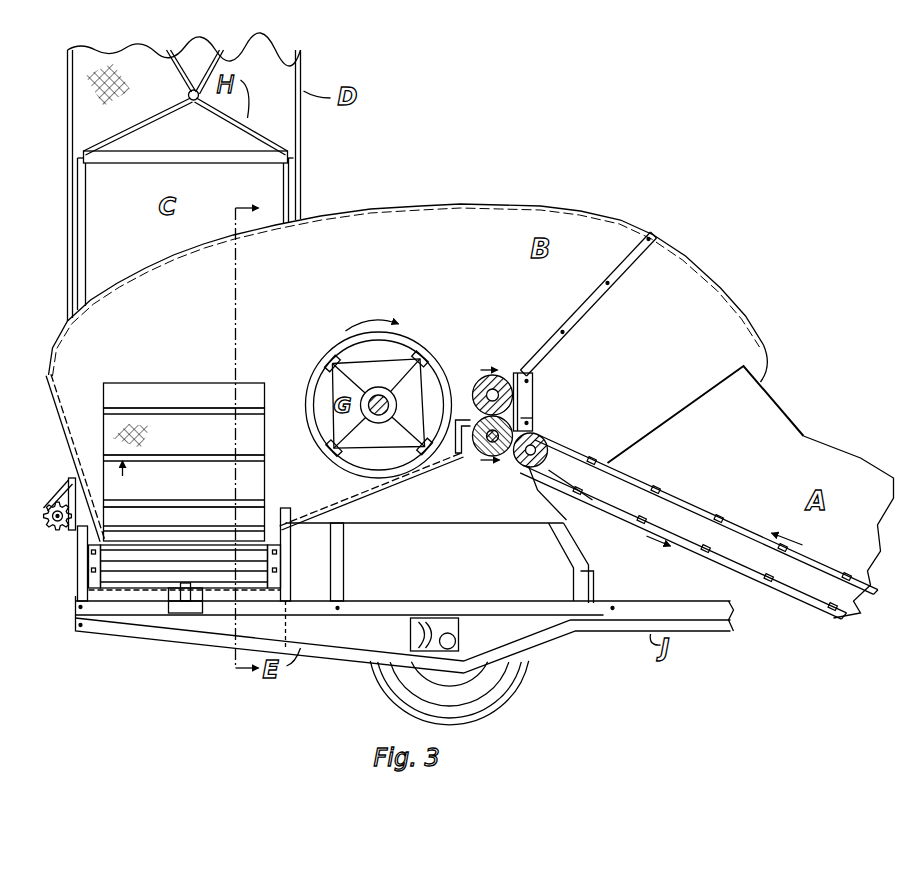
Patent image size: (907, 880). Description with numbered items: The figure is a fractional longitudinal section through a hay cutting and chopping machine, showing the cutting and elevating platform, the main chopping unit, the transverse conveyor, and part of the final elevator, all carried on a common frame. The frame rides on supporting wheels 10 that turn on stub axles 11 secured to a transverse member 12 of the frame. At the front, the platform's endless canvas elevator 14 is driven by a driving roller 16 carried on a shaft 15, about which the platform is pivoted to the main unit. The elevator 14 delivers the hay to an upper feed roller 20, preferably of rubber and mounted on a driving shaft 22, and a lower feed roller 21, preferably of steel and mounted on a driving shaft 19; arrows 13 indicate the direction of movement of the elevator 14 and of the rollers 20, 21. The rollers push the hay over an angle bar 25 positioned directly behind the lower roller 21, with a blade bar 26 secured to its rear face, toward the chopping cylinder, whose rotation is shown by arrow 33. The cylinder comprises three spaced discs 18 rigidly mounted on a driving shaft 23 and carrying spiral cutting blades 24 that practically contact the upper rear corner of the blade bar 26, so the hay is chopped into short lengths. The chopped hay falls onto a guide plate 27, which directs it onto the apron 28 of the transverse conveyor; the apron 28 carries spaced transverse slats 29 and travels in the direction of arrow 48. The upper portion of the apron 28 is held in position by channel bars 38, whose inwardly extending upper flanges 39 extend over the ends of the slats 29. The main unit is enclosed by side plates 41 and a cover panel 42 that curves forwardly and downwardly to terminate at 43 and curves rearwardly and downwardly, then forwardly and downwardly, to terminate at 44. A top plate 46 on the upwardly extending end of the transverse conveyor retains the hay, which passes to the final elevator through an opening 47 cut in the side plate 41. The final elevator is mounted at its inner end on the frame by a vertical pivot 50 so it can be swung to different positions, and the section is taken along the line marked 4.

The section line 4- 4 is at (236, 439).
The supporting wheel 10 is at (518, 700).
The stub axle 11 is at (435, 634).
The transverse member 12 is at (490, 622).
The arrow 13 is at (648, 556).
The elevator 14 is at (693, 512).
The shaft 15 is at (533, 470).
The driving roller 16 is at (548, 462).
The disc 18 is at (379, 405).
The driving shaft 19 is at (533, 421).
The upper feed roller 20 is at (466, 388).
The lower feed roller 21 is at (482, 462).
The driving shaft 22 is at (533, 402).
The driving shaft 23 is at (378, 403).
The spiral cutting blade 24 is at (442, 372).
The angle bar 25 is at (445, 390).
The blade bar 26 is at (448, 468).
The guide plate 27 is at (355, 505).
The apron 28 is at (184, 431).
The transverse slat 29 is at (143, 498).
The arrow 33 is at (356, 322).
The channel bar 38 is at (80, 575).
The upper flange 39 is at (92, 552).
The side plate 41 is at (136, 442).
The cover panel 42 is at (400, 210).
The terminating end of cover panel 43 is at (771, 345).
The terminating end of cover panel 44 is at (104, 545).
The top plate 46 is at (186, 230).
The opening 47 is at (260, 398).
The arrow 48 is at (128, 486).
The vertical pivot 50 is at (185, 620).